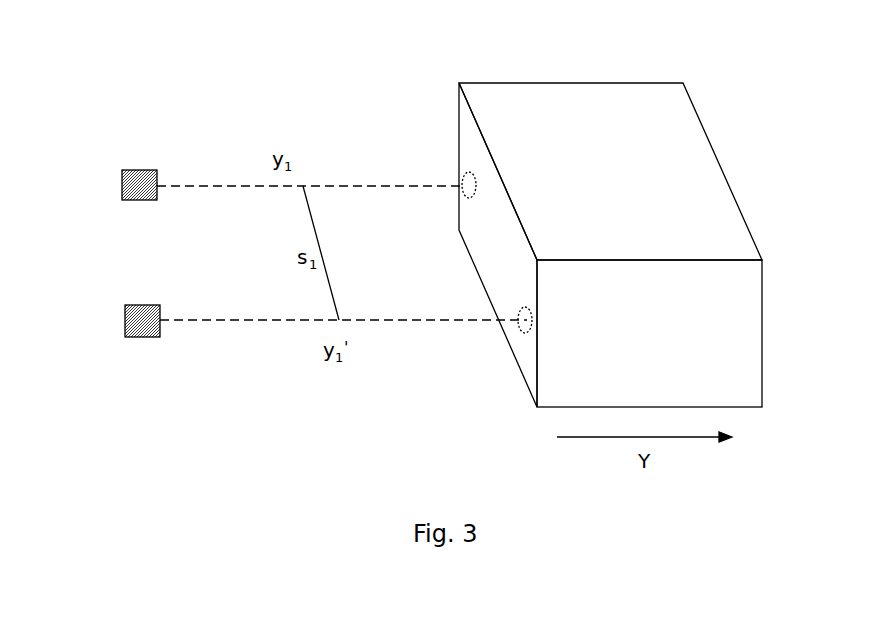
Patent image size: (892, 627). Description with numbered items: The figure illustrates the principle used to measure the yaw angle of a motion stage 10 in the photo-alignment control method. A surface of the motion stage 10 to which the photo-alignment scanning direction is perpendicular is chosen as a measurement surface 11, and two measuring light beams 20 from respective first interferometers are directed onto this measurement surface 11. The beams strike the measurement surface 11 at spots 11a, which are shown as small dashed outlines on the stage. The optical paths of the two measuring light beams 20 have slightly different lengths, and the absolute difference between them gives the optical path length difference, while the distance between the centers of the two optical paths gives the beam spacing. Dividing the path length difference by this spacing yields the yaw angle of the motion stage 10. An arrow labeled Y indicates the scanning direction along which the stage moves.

The motion stage 10 is at (566, 69).
The measurement surface 11 is at (498, 256).
The irradiation point on side surface 11a is at (456, 197).
The measuring light beams 20 is at (143, 170).